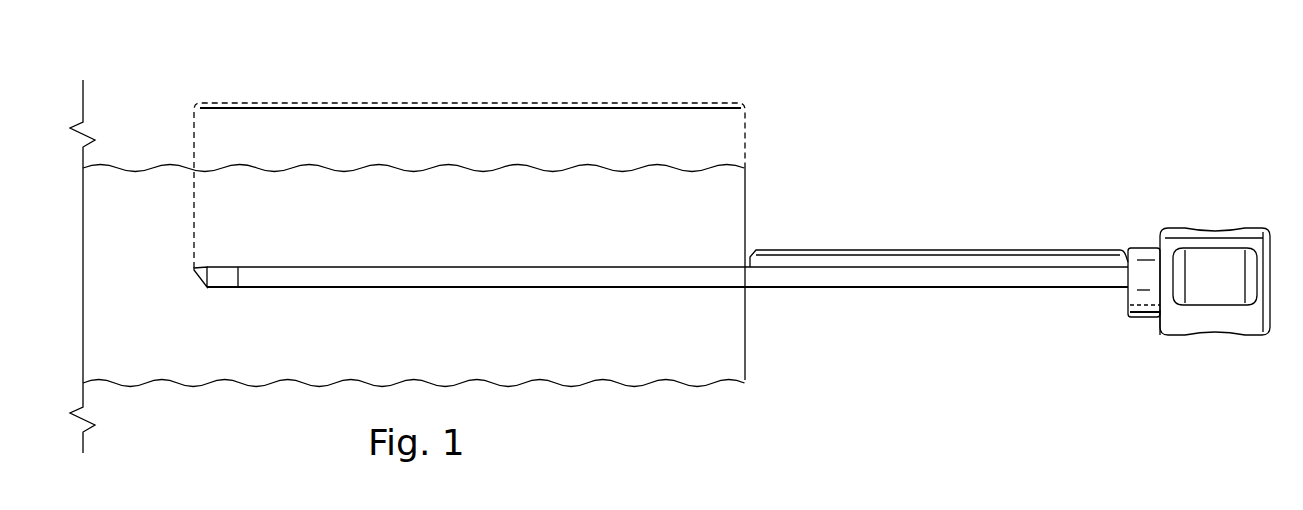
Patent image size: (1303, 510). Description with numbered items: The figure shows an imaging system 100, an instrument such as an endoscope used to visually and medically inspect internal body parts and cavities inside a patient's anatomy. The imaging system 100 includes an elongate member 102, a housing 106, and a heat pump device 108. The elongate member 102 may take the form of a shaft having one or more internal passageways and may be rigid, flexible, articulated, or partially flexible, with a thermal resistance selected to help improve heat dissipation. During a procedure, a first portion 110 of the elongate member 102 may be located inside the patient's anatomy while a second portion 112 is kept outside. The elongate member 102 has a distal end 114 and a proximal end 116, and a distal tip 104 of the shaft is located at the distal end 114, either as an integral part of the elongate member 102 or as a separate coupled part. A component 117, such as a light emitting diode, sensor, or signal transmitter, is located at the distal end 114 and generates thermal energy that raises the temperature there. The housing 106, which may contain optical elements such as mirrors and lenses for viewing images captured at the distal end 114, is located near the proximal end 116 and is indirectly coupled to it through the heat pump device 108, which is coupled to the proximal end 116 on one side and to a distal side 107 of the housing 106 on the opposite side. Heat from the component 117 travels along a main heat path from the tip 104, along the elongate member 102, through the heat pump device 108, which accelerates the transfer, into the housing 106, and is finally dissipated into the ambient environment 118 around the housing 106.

The imaging system 100 is at (1010, 76).
The elongate member 102 is at (657, 287).
The distal tip 104 is at (218, 266).
The housing 106 is at (1226, 226).
The distal side of the housing 107 is at (1158, 322).
The heat pump device 108 is at (1143, 247).
The first portion of the elongate member 110 is at (468, 92).
The second portion of the elongate member 112 is at (938, 238).
The distal end 114 is at (168, 308).
The proximal end 116 is at (1085, 316).
The component 117 is at (219, 290).
The ambient environment 118 is at (898, 405).